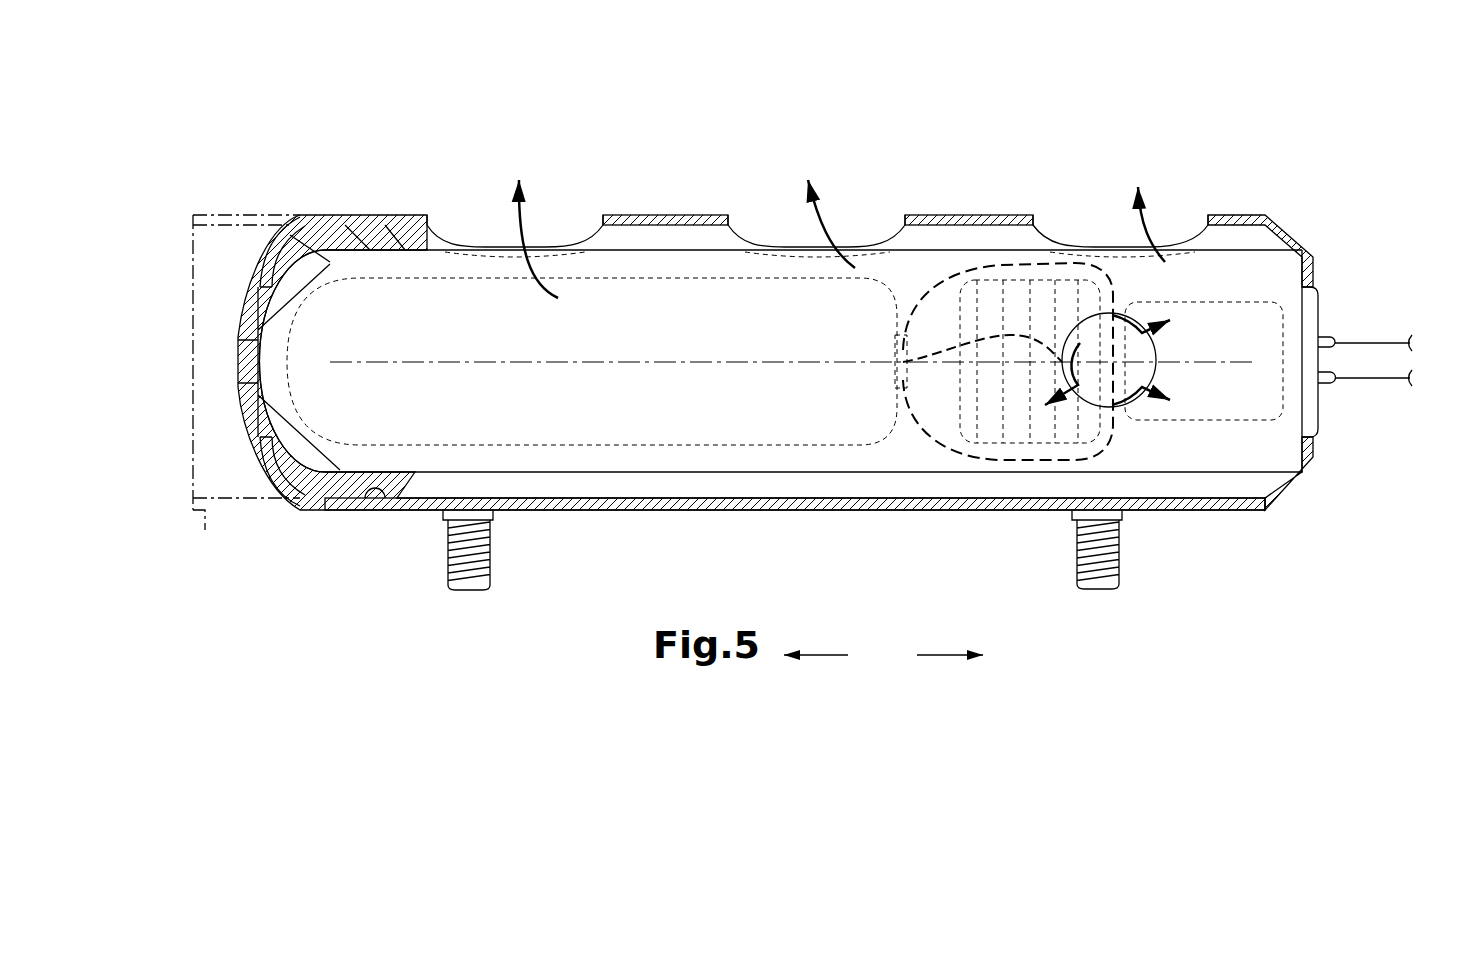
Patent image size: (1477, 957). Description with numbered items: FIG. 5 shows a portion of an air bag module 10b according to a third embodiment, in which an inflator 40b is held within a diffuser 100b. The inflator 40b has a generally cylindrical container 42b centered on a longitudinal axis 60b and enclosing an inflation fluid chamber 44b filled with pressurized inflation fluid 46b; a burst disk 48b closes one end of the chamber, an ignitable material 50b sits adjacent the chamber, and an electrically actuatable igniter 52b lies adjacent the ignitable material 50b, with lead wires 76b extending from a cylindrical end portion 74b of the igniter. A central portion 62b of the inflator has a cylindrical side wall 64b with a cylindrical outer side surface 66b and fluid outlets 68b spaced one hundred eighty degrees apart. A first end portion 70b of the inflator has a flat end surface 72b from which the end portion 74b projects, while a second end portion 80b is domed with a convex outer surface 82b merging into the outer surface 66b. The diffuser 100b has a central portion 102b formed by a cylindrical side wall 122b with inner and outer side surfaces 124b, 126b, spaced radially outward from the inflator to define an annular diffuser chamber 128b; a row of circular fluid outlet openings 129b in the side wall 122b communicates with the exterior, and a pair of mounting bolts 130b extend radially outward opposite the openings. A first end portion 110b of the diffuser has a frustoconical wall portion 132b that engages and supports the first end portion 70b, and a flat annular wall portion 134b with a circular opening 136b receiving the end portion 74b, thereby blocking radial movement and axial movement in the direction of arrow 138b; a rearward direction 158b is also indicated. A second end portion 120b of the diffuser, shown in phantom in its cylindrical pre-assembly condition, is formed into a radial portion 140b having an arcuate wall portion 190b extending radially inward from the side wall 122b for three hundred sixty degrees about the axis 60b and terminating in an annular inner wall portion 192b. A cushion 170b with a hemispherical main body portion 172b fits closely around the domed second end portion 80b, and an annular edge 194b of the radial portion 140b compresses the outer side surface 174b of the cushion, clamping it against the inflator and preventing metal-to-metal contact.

The air bag module 10b is at (676, 100).
The inflator 40b is at (642, 477).
The container 42b is at (547, 473).
The inflation fluid chamber 44b is at (605, 349).
The inflation fluid 46b is at (714, 336).
The burst disk 48b is at (890, 345).
The ignitable material 50b is at (992, 427).
The igniter 52b is at (1207, 338).
The longitudinal axis 60b is at (410, 362).
The central portion 62b is at (966, 250).
The cylindrical side wall 64b is at (698, 250).
The cylindrical outer side surface 66b is at (640, 250).
The fluid outlets 68b is at (1137, 403).
The first end portion 70b is at (1275, 242).
The end surface 72b is at (1327, 254).
The cylindrical end portion 74b is at (1320, 307).
The lead wires 76b is at (1378, 348).
The second end portion 80b is at (352, 243).
The convex outer surface 82b is at (248, 362).
The diffuser 100b is at (692, 512).
The central portion 102b is at (778, 511).
The first end portion 110b is at (1300, 228).
The second end portion 120b is at (267, 489).
The cylindrical side wall 122b is at (985, 212).
The inner side surface 124b is at (1200, 246).
The outer side surface 126b is at (1238, 214).
The diffuser chamber 128b is at (1015, 242).
The fluid outlet openings 129b is at (588, 248).
The mounting bolts 130b is at (487, 568).
The frustoconical wall portion 132b is at (1293, 490).
The annular wall portion 134b is at (1317, 452).
The circular opening 136b is at (1316, 433).
The arrow 138b is at (946, 669).
The radial portion 140b is at (190, 227).
The rearward direction 158b is at (820, 669).
The cushion 170b is at (305, 240).
The main body portion 172b is at (378, 242).
The outer side surface 174b is at (296, 514).
The arcuate wall portion 190b is at (264, 242).
The inner wall portion 192b is at (260, 280).
The annular edge 194b is at (258, 436).